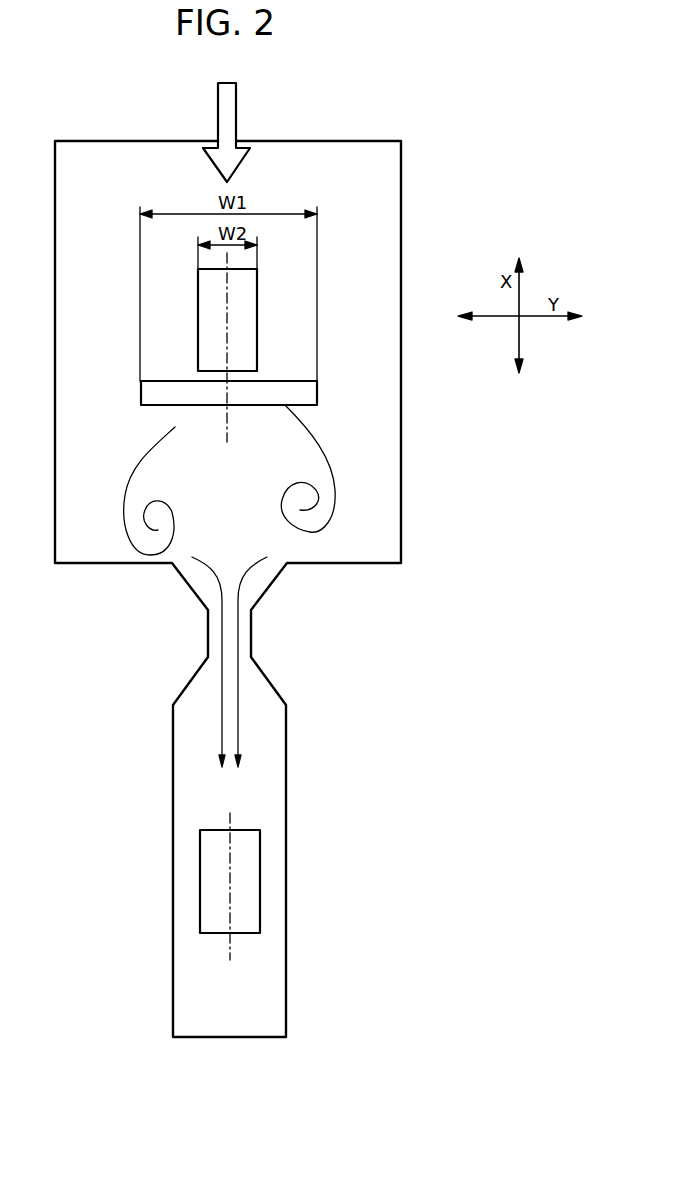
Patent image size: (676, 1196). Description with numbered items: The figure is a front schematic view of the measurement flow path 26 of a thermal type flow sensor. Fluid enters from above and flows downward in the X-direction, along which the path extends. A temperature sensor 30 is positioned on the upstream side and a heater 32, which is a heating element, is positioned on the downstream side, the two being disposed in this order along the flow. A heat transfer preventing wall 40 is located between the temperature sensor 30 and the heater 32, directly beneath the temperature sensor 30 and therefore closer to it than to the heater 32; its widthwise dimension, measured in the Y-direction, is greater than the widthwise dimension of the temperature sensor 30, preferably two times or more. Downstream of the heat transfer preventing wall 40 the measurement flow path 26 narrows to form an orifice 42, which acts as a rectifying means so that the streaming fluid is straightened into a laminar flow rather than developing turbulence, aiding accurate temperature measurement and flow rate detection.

The measurement flow path 26 is at (401, 270).
The temperature sensor 30 is at (213, 305).
The heater 32 is at (250, 882).
The heat transfer preventing wall 40 is at (148, 394).
The orifice 42 is at (245, 627).